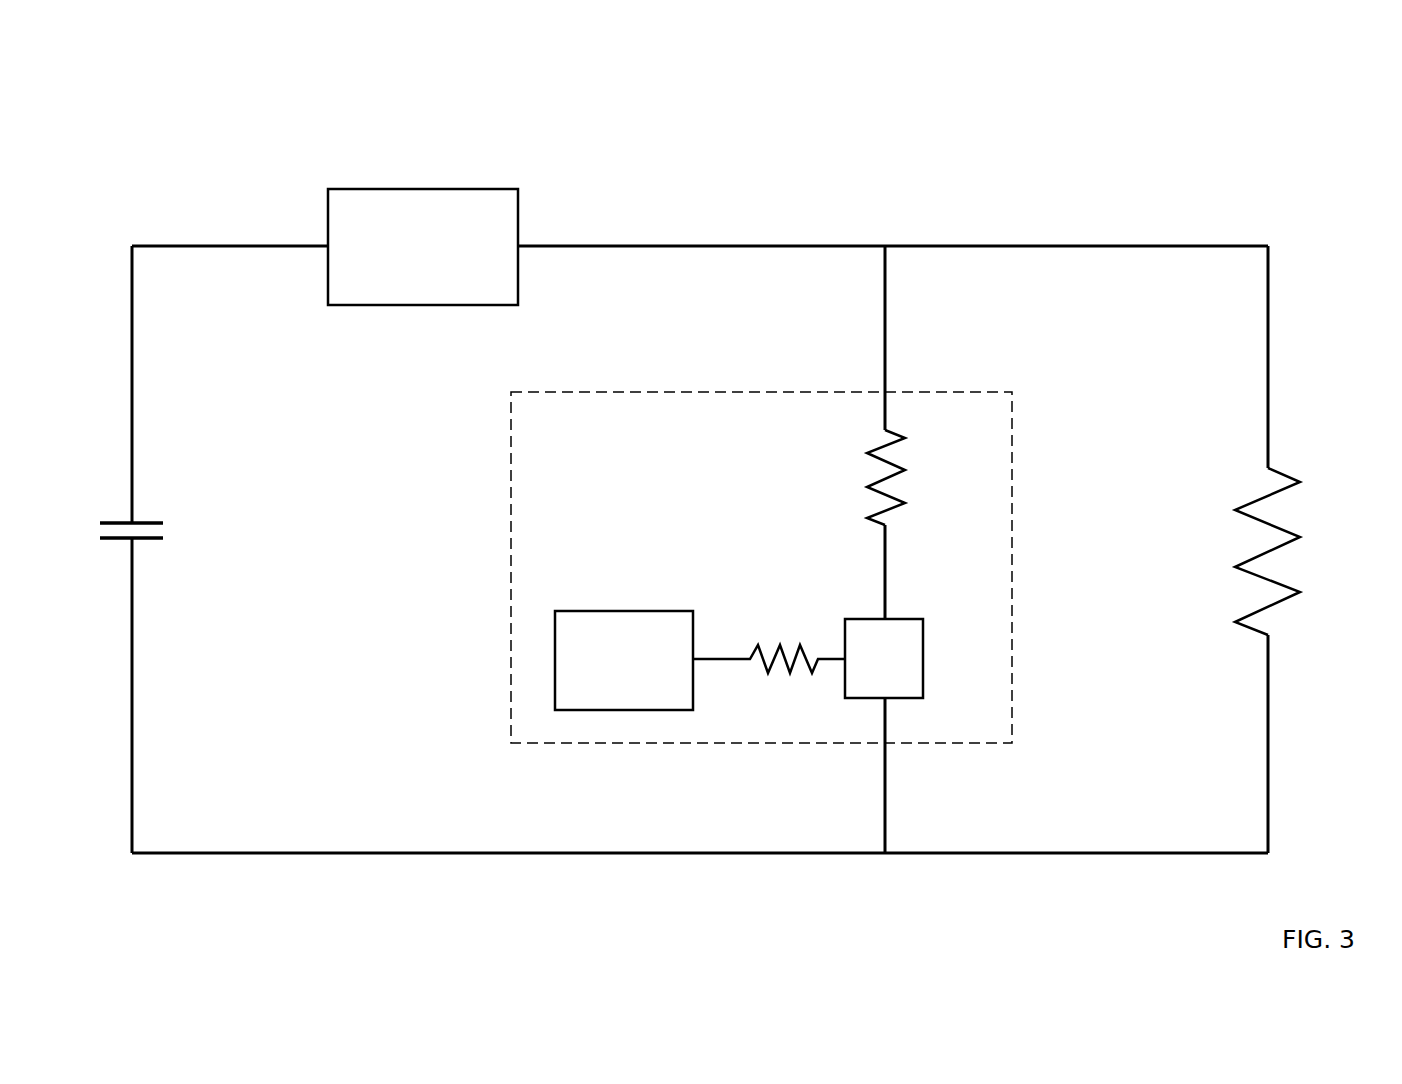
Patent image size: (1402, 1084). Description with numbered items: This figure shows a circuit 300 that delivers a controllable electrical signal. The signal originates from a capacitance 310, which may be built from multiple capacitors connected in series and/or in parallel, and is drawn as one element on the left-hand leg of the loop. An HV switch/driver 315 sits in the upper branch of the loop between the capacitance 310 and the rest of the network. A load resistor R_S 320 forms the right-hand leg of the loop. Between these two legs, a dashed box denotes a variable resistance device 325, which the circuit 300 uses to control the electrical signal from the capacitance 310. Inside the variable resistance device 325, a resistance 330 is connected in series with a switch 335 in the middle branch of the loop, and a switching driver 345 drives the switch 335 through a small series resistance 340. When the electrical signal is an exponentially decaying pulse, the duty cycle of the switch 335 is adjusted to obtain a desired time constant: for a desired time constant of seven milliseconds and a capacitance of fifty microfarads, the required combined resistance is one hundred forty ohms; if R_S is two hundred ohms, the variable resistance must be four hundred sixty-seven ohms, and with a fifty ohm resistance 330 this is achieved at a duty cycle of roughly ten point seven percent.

The circuit 300 is at (1177, 118).
The capacitance 310 is at (89, 523).
The HV switch/driver 315 is at (388, 189).
The resistor Rs 320 is at (1290, 482).
The variable resistance device 325 is at (510, 505).
The resistance 330 is at (850, 477).
The switch 335 is at (923, 635).
The resistor 340 is at (785, 640).
The switching driver 345 is at (648, 610).